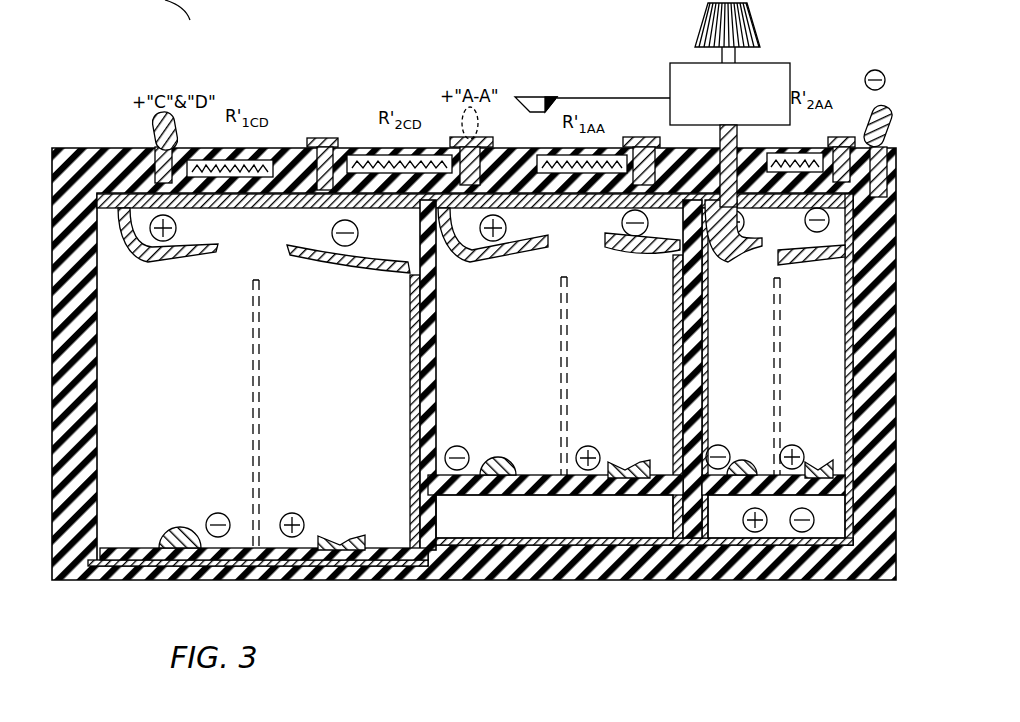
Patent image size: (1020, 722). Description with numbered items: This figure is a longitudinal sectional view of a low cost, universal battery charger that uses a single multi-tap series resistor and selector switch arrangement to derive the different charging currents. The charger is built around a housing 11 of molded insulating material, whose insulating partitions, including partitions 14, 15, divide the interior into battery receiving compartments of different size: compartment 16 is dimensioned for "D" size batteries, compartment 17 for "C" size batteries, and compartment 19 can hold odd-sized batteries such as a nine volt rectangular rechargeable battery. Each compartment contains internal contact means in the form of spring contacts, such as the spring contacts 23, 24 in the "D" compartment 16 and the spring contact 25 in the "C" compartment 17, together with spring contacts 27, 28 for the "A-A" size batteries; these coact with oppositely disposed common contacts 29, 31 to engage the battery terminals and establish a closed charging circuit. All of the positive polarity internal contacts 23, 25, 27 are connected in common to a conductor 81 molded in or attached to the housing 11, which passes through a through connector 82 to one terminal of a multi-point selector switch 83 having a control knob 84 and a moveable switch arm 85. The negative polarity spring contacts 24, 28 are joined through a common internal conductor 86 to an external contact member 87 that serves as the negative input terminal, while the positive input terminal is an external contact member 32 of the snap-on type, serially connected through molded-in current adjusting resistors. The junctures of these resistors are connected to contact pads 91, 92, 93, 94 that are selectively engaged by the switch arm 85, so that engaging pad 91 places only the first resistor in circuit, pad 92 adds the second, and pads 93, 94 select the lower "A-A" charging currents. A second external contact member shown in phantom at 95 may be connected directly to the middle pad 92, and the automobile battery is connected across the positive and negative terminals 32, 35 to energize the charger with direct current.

The housing 11 is at (90, 430).
The insulating partition 14 is at (554, 516).
The insulating partition 15 is at (826, 494).
The battery receiving compartment 16 is at (338, 366).
The battery receiving compartment 17 is at (619, 351).
The battery receiving compartment 19 is at (730, 517).
The spring contact 23 is at (165, 262).
The spring contact 24 is at (360, 268).
The spring contact 25 is at (497, 258).
The spring contact 27 is at (624, 250).
The spring contact 28 is at (808, 266).
The common contact 29 is at (185, 530).
The common contact 31 is at (345, 535).
The external contact member 32 is at (150, 125).
The negative terminal 35 is at (190, 20).
The conductor 81 is at (378, 209).
The through connector 82 is at (738, 137).
The multi-point selector switch 83 is at (792, 62).
The control knob 84 is at (745, 25).
The moveable switch arm 85 is at (570, 96).
The common internal conductor 86 is at (410, 384).
The external contact member 87 is at (888, 112).
The contact pad 91 is at (318, 138).
The contact pad 92 is at (462, 140).
The contact pad 93 is at (640, 137).
The contact pad 94 is at (845, 137).
The second external contact member 95 is at (480, 127).